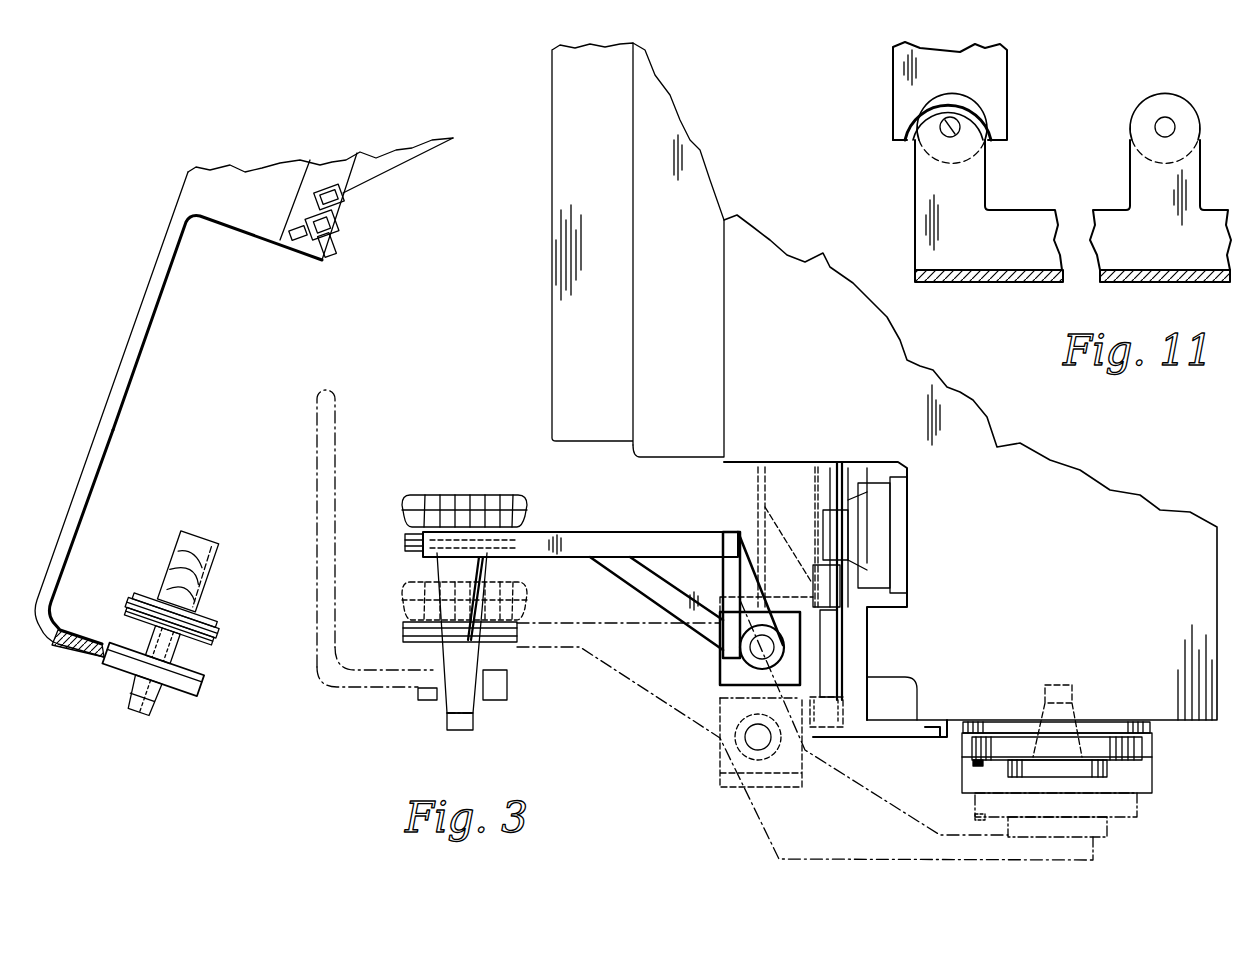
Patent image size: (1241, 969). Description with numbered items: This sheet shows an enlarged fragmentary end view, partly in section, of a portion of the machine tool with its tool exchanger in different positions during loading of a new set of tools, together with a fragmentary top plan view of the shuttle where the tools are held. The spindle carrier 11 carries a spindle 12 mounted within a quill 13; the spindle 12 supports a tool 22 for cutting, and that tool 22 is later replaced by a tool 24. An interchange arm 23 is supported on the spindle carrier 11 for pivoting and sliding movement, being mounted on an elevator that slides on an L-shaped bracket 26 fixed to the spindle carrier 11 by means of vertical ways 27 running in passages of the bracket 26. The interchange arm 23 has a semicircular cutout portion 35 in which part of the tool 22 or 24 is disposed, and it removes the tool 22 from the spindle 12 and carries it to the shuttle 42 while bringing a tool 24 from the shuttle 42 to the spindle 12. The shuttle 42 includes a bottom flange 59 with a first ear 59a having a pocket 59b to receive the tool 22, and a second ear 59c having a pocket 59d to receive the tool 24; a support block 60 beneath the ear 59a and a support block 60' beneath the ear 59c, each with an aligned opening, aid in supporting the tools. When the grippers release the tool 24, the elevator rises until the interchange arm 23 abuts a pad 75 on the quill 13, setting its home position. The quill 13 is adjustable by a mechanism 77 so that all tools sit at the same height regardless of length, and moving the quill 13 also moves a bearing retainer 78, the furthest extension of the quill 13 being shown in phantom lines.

In FIG. 3, the shuttle 42 is at (128, 312).
In FIG. 3, the tool 22 is at (181, 536).
In FIG. 3, the support block 60 is at (259, 698).
In FIG. 11, the support block 60 is at (927, 167).
In FIG. 3, the ear 59a is at (196, 679).
In FIG. 11, the ear 59a is at (916, 104).
In FIG. 3, the tool 24 is at (432, 494).
In FIG. 3, the interchange arm 23 is at (583, 519).
In FIG. 11, the interchange arm 23 is at (885, 55).
In FIG. 3, the ear 59c is at (508, 680).
In FIG. 11, the ear 59c is at (1131, 118).
In FIG. 3, the adjusting mechanism 77 is at (880, 526).
In FIG. 3, the L-shaped bracket 26 is at (858, 623).
In FIG. 3, the vertical ways 27 is at (832, 681).
In FIG. 3, the spindle carrier 11 is at (1097, 601).
In FIG. 3, the bearing retainer 78 is at (1152, 728).
In FIG. 3, the quill 13 is at (1150, 761).
In FIG. 3, the spindle 12 is at (1100, 777).
In FIG. 3, the pad 75 is at (972, 763).
In FIG. 11, the semicircular cutout portion 35 is at (970, 103).
In FIG. 11, the pocket or opening 59b is at (958, 132).
In FIG. 11, the bottom flange 59 is at (975, 283).
In FIG. 11, the pocket or opening 59d is at (1164, 124).
In FIG. 11, the support block 60' is at (1145, 149).